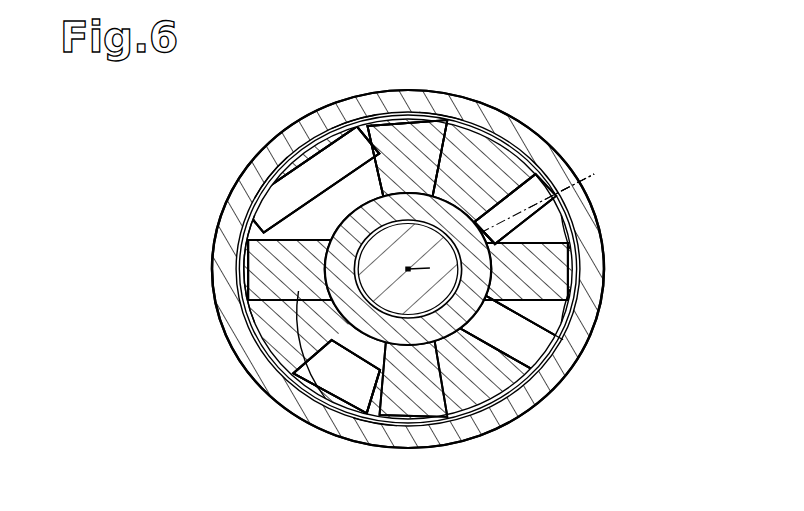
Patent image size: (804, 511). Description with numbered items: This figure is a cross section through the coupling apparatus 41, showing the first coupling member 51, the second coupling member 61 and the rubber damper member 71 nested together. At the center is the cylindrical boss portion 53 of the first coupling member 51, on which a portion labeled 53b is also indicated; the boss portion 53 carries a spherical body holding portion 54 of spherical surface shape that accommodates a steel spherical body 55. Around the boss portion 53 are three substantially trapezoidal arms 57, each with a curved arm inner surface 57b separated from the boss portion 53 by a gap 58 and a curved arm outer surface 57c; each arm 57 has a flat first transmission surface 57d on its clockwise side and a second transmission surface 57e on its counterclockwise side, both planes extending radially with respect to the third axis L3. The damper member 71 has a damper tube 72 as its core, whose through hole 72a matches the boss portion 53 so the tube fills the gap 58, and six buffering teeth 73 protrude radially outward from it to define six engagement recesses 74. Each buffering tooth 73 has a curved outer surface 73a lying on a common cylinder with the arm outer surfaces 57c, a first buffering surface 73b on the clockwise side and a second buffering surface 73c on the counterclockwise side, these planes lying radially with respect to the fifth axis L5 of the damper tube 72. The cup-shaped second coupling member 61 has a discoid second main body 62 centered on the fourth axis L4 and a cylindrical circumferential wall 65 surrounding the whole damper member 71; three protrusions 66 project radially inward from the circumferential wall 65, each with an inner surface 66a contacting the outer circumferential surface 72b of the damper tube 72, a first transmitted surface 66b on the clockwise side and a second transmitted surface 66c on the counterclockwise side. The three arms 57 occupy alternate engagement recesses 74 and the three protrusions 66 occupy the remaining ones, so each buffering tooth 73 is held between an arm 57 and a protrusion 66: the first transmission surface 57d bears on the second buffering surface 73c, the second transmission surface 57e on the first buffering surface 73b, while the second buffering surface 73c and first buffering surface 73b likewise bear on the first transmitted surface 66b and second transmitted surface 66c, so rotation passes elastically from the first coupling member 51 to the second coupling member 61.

The coupling apparatus 41 is at (580, 108).
The first coupling member 51 is at (643, 269).
The boss portion 53 is at (412, 318).
The shaft arm 53b is at (507, 270).
The spherical body holding portion 54 is at (508, 195).
The spherical body 55 is at (421, 256).
The arm 57 is at (333, 135).
The arm inner surface 57b is at (378, 352).
The arm outer surface 57c is at (303, 407).
The first transmission surface 57d is at (585, 305).
The second transmission surface 57e is at (583, 240).
The gap 58 is at (357, 188).
The second coupling member 61 is at (529, 93).
The second main body 62 is at (278, 158).
The circumferential wall 65 is at (570, 350).
The protrusion 66 is at (222, 288).
The inner surface 66a is at (313, 292).
The first transmitted surface 66b is at (232, 235).
The second transmitted surface 66c is at (245, 325).
The damper member 71 is at (250, 196).
The damper tube 72 is at (455, 352).
The through hole 72a is at (410, 196).
The outer circumferential surface 72b is at (300, 260).
The buffering tooth 73 is at (396, 112).
The outer surface 73a is at (378, 440).
The first buffering surface 73b is at (445, 117).
The second buffering surface 73c is at (352, 110).
The engagement recess 74 is at (312, 190).
The third axis L3 is at (547, 195).
The fourth axis L4 is at (593, 183).
The fifth axis L5 is at (627, 174).